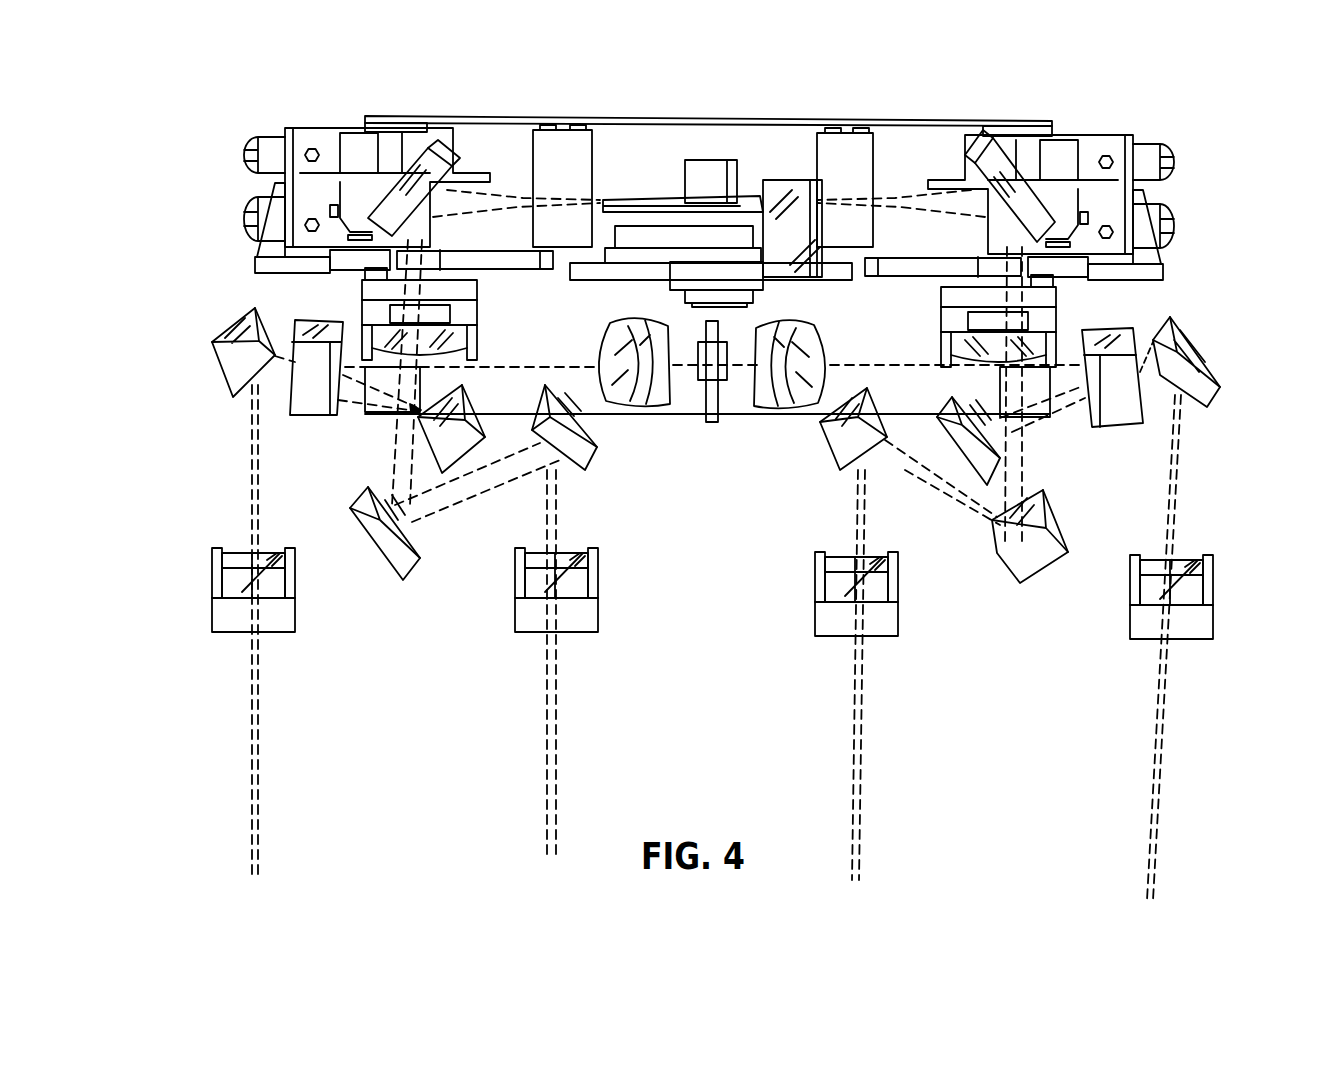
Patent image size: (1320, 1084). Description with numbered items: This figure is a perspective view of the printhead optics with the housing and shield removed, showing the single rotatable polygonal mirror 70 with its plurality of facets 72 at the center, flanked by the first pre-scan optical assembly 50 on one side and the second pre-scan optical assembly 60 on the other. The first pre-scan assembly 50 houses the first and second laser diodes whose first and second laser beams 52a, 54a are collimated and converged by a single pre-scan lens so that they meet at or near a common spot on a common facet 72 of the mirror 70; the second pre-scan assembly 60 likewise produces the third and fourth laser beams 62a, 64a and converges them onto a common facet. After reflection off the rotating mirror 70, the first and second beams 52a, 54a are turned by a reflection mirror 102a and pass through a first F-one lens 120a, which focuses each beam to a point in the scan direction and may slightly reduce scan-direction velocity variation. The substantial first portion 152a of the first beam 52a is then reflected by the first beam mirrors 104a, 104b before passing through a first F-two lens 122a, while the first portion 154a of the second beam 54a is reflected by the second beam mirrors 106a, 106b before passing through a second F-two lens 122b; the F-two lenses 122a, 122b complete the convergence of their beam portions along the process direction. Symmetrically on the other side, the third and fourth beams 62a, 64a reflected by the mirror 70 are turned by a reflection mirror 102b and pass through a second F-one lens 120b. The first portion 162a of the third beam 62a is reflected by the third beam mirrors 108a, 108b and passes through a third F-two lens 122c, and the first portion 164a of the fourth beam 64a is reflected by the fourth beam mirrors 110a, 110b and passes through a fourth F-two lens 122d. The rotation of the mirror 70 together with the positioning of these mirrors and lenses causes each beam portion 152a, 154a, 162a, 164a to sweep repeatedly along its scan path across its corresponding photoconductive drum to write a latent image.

The first pre-scan optical assembly 50 is at (233, 176).
The second pre-scan optical assembly 60 is at (1041, 248).
The rotatable polygonal mirror 70 is at (752, 196).
The facets 72 is at (680, 200).
The first laser beam 52a is at (496, 188).
The second laser beam 54a is at (504, 212).
The third laser beam 62a is at (894, 168).
The fourth laser beam 64a is at (901, 224).
The reflection mirror 102a is at (412, 167).
The reflection mirror 102b is at (1005, 161).
The first beam mirror 104a is at (473, 408).
The first beam mirror 104b is at (216, 368).
The second beam mirror 106a is at (400, 565).
The second beam mirror 106b is at (583, 455).
The third beam mirror 108a is at (997, 458).
The third beam mirror 108b is at (1205, 395).
The fourth beam mirror 110a is at (1033, 563).
The fourth beam mirror 110b is at (830, 466).
The first F-1 lens 120a is at (372, 306).
The second F-1 lens 120b is at (966, 324).
The first F-2 lens 122a is at (278, 620).
The second F-2 lens 122b is at (585, 618).
The third F-2 lens 122c is at (1205, 618).
The fourth F-2 lens 122d is at (885, 618).
The first portion of the first beam 152a is at (262, 727).
The first portion of the second beam 154a is at (557, 715).
The first portion of the third beam 162a is at (1175, 730).
The first portion of the fourth beam 164a is at (862, 727).